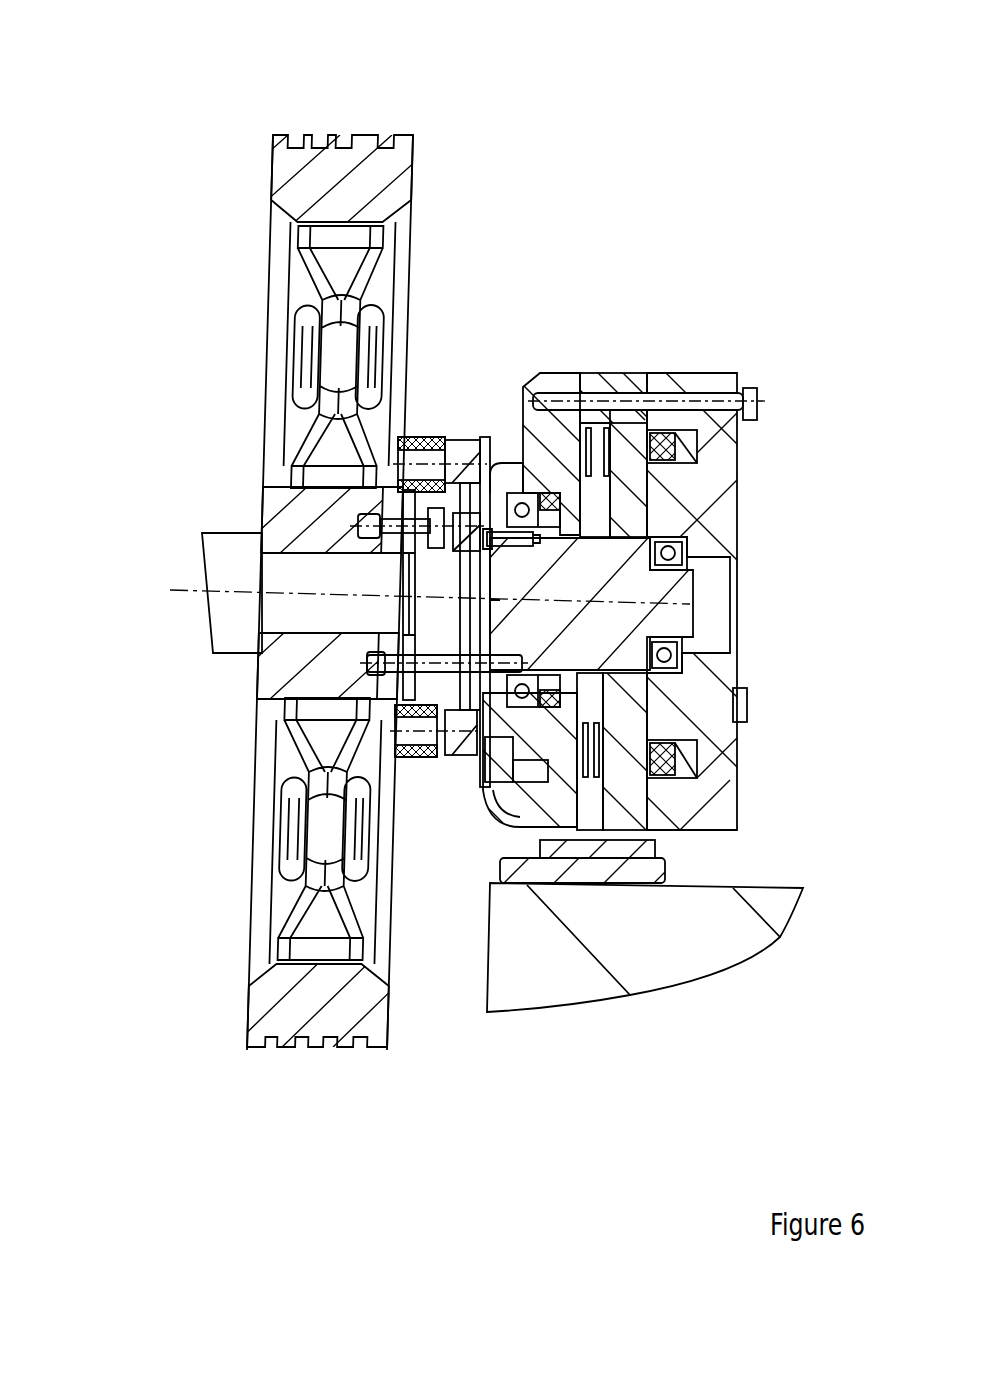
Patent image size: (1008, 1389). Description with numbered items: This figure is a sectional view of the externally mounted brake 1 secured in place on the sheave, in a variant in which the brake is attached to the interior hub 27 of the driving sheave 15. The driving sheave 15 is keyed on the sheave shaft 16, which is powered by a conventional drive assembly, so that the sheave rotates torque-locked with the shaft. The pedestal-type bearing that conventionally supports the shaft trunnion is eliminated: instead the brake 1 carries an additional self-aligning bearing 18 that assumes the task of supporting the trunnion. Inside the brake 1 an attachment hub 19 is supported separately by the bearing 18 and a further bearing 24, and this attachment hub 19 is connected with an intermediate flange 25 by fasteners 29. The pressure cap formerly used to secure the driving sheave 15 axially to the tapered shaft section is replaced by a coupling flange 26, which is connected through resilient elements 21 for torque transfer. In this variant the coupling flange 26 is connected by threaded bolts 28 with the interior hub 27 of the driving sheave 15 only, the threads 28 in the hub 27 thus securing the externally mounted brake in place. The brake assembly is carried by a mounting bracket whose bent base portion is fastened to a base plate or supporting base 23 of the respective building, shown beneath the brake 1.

The brake 1 is at (700, 373).
The driving sheave 15 is at (365, 172).
The sheave shaft 16 is at (228, 653).
The bearing 18 is at (650, 373).
The attachment hub 19 is at (680, 583).
The resilient elements 21 is at (437, 437).
The supporting base 23 is at (620, 937).
The bearing 24 is at (687, 557).
The intermediate flange 25 is at (470, 437).
The coupling flange 26 is at (421, 437).
The interior hub 27 is at (357, 530).
The threaded bolts 28 is at (395, 506).
The fasteners 29 is at (527, 547).